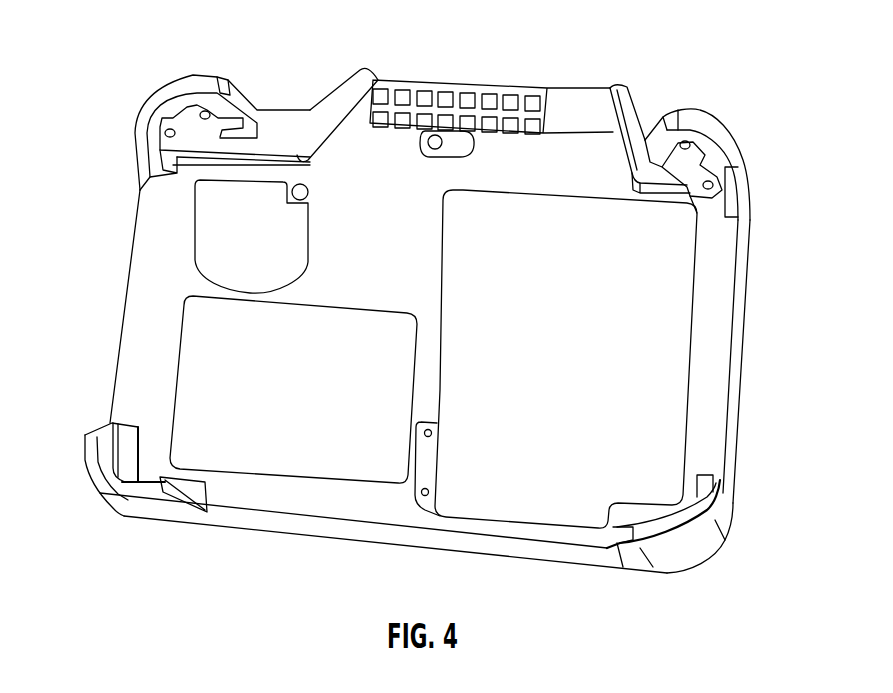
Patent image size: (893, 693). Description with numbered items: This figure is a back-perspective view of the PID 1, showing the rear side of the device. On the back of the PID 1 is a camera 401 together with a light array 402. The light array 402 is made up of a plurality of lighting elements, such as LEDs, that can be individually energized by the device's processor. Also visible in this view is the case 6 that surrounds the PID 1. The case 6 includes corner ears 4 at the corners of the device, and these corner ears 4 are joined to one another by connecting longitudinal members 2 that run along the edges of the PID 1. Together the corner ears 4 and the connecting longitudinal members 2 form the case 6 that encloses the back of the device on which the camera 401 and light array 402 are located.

The PID 1 is at (703, 72).
The connecting longitudinal members 2 is at (737, 400).
The corner ears 4 is at (700, 557).
The case 6 is at (95, 494).
The camera 401 is at (417, 133).
The light array 402 is at (457, 83).